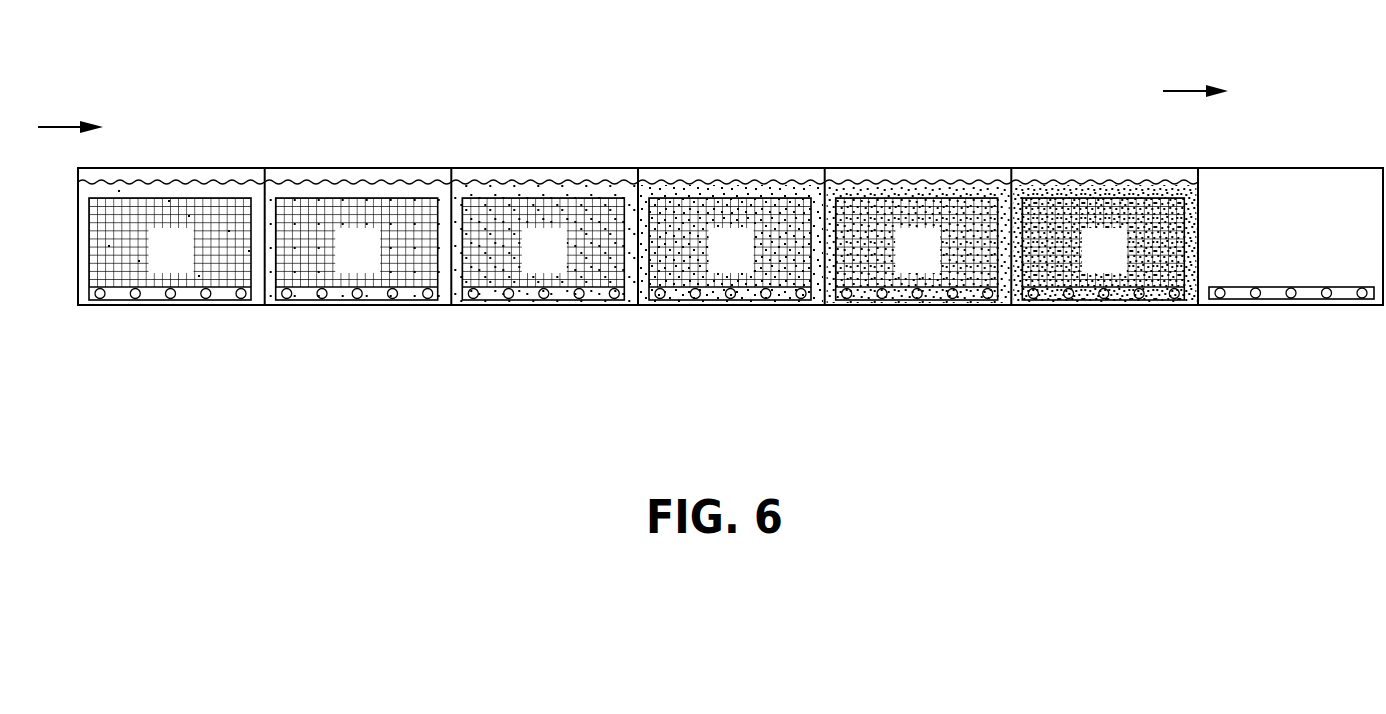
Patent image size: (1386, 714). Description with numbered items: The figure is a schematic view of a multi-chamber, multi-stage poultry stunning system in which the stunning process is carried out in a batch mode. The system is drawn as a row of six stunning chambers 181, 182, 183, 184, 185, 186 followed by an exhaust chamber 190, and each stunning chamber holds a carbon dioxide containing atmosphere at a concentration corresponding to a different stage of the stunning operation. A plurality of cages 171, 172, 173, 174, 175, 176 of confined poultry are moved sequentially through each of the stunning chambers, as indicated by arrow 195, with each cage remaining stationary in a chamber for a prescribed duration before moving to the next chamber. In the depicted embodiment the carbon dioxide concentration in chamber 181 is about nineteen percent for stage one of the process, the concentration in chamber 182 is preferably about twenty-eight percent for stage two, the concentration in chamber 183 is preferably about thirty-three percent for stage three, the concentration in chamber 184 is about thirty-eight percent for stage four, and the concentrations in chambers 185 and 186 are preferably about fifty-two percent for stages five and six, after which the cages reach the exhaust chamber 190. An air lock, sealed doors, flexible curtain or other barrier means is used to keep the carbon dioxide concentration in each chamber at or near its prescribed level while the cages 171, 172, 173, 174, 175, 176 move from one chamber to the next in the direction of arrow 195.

The cage 171 is at (77, 218).
The cage 172 is at (358, 208).
The cage 173 is at (544, 208).
The cage 174 is at (731, 208).
The cage 175 is at (918, 208).
The cage 176 is at (1104, 208).
The stunning chamber 181 is at (95, 307).
The stunning chamber 182 is at (357, 337).
The stunning chamber 183 is at (543, 337).
The stunning chamber 184 is at (730, 337).
The stunning chamber 185 is at (917, 337).
The stunning chamber 186 is at (1103, 337).
The exhaust chamber 190 is at (1291, 337).
The arrow 195 is at (60, 127).